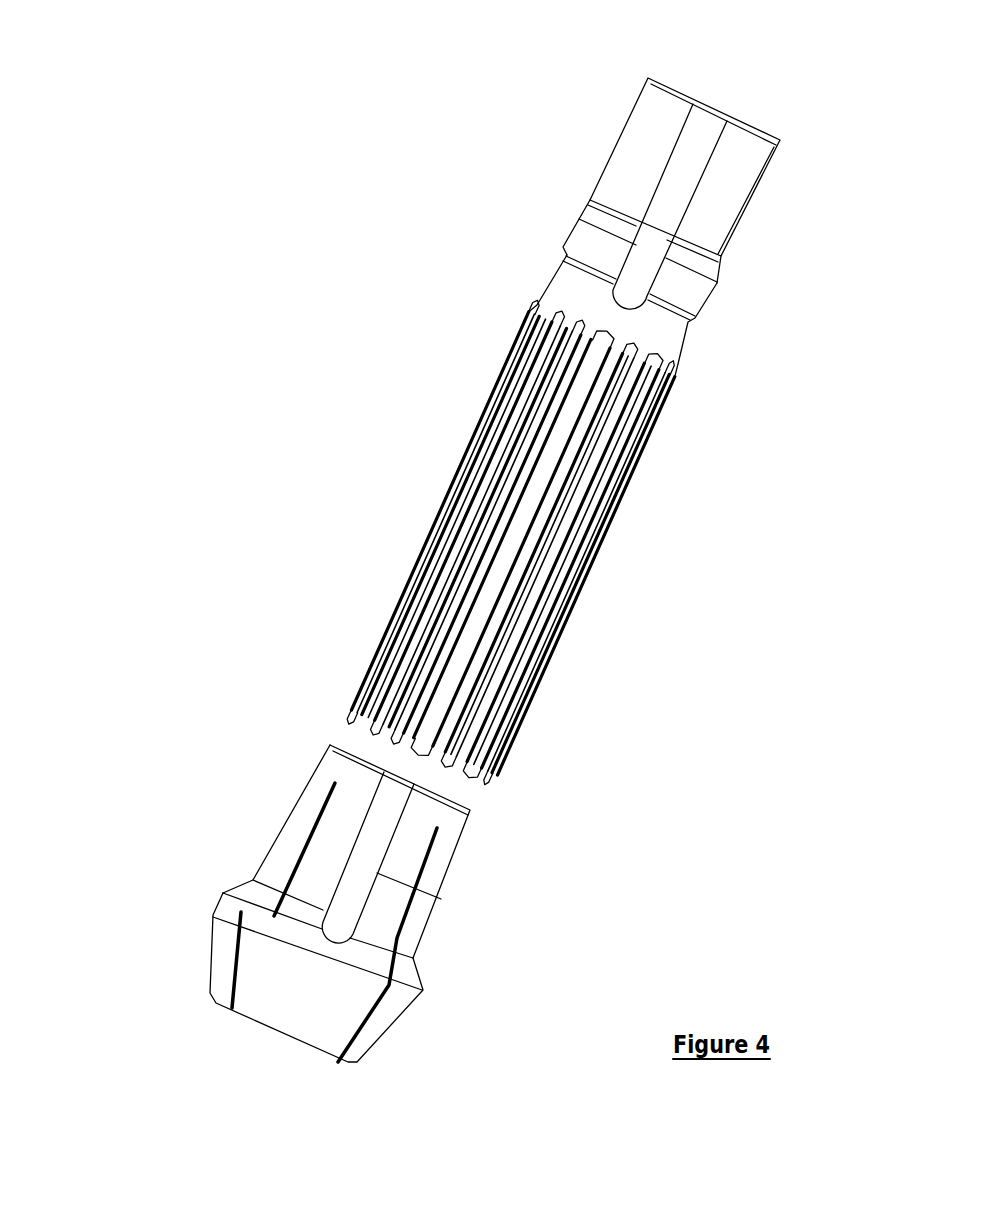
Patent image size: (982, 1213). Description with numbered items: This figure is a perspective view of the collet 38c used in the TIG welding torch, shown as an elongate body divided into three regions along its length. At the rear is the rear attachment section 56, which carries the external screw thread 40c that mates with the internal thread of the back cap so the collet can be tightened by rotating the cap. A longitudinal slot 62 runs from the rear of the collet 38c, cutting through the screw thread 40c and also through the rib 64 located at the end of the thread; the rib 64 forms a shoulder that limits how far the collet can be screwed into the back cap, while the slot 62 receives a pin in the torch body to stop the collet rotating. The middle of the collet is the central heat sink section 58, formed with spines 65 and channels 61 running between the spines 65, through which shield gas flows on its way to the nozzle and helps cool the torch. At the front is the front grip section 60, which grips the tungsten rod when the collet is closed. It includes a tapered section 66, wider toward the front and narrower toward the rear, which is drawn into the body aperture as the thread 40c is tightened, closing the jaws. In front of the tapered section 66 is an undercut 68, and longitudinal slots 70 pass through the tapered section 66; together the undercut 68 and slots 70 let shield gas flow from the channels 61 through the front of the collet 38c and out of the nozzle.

The collet 38c is at (303, 216).
The external screw thread 40c is at (627, 126).
The longitudinal slot 62 is at (690, 174).
The rib 64 is at (592, 238).
The rear attachment section 56 is at (738, 375).
The central heat sink section 58 is at (215, 657).
The spines 65 is at (353, 701).
The channels 61 is at (380, 731).
The longitudinal slots 70 is at (370, 847).
The tapered section 66 is at (420, 932).
The undercut 68 is at (404, 966).
The front grip section 60 is at (182, 687).